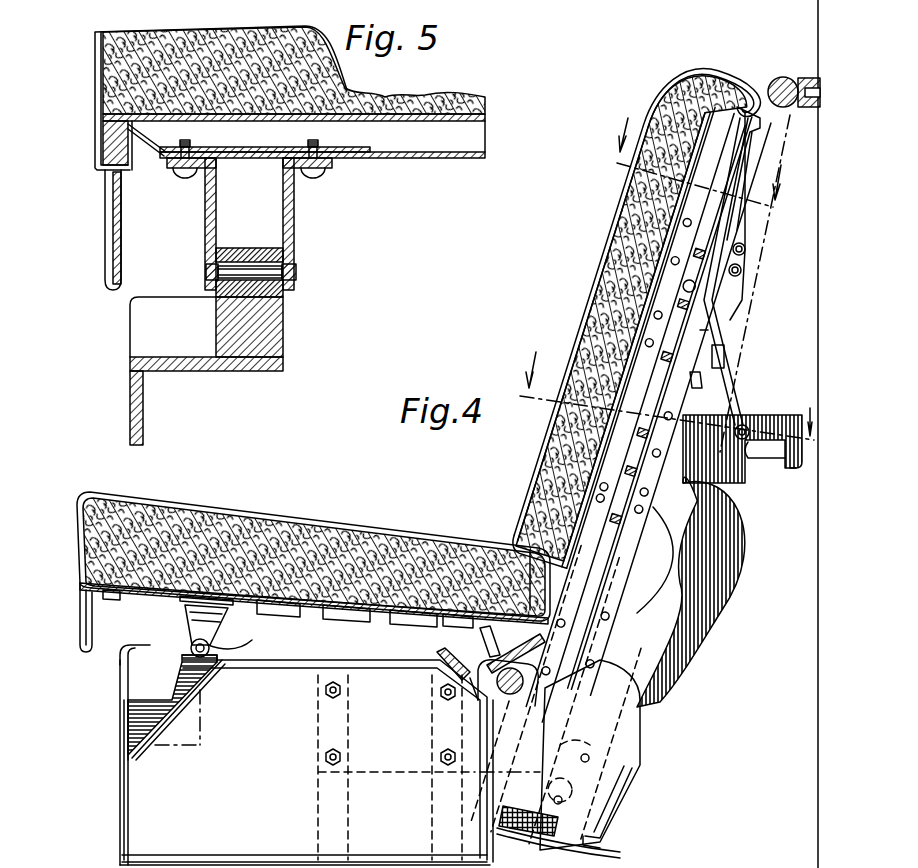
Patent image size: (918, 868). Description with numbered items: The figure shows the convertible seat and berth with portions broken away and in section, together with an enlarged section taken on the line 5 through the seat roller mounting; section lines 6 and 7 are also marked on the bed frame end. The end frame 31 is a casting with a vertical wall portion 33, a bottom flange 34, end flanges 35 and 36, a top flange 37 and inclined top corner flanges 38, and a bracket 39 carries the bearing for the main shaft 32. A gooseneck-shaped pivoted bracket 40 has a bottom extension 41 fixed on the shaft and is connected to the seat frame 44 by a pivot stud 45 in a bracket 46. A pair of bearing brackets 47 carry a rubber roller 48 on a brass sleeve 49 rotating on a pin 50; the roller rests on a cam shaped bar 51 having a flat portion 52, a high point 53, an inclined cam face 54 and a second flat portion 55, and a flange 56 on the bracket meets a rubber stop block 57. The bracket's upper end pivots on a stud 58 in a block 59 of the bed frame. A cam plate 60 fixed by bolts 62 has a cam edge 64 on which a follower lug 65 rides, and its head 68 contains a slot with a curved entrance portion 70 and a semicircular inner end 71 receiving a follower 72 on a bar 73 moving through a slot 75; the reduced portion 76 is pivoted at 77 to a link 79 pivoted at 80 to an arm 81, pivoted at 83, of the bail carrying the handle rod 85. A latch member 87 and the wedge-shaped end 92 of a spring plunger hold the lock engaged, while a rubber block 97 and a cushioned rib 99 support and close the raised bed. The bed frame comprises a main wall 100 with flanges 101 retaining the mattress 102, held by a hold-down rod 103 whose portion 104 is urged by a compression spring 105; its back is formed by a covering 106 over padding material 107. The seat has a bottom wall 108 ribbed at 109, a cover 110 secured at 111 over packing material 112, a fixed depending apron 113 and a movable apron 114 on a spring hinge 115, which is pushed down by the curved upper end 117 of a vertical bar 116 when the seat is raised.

In FIG. 4, the section line 5— 5 is at (182, 755).
In FIG. 4, the section line 6— 6 is at (695, 283).
In FIG. 4, the section line 7— 7 is at (667, 404).
In FIG. 4, the end frame 31 is at (128, 792).
In FIG. 4, the main shaft 32 is at (470, 690).
In FIG. 4, the vertical wall portion 33 is at (128, 816).
In FIG. 4, the bottom flange 34 is at (232, 860).
In FIG. 4, the end flange 35 is at (122, 838).
In FIG. 4, the end flange 36 is at (498, 826).
In FIG. 5, the top flange 37 is at (130, 393).
In FIG. 4, the top flange 37 is at (298, 668).
In FIG. 5, the inclined top corner flange 38 is at (205, 370).
In FIG. 4, the inclined top corner flange 38 is at (205, 685).
In FIG. 4, the bracket 39 is at (480, 704).
In FIG. 4, the pivoted bracket 40 is at (660, 530).
In FIG. 4, the bottom extension 41 is at (508, 655).
In FIG. 4, the seat frame 44 is at (92, 492).
In FIG. 4, the pivot stud 45 is at (495, 560).
In FIG. 4, the bracket 46 is at (225, 652).
In FIG. 5, the bearing bracket 47 is at (283, 190).
In FIG. 4, the bearing bracket 47 is at (220, 618).
In FIG. 5, the rubber roller 48 is at (250, 248).
In FIG. 5, the brass sleeve 49 is at (297, 272).
In FIG. 5, the pin 50 is at (207, 272).
In FIG. 4, the pin 50 is at (192, 647).
In FIG. 5, the cam shaped bar 51 is at (283, 322).
In FIG. 4, the cam shaped bar 51 is at (205, 712).
In FIG. 4, the flat portion 52 is at (218, 672).
In FIG. 4, the high point 53 is at (193, 655).
In FIG. 4, the inclined cam face 54 is at (190, 660).
In FIG. 4, the second flat portion 55 is at (148, 700).
In FIG. 4, the flange 56 is at (482, 638).
In FIG. 4, the rubber stop block 57 is at (445, 656).
In FIG. 4, the stud 58 is at (530, 470).
In FIG. 4, the block 59 is at (596, 520).
In FIG. 4, the cam plate 60 is at (718, 612).
In FIG. 4, the bolt 62 is at (326, 755).
In FIG. 4, the cam edge 64 is at (645, 640).
In FIG. 4, the follower lug 65 is at (528, 690).
In FIG. 4, the head 68 is at (798, 418).
In FIG. 4, the curved entrance portion 70 is at (794, 470).
In FIG. 4, the semicircular inner end 71 is at (765, 454).
In FIG. 4, the follower 72 is at (572, 790).
In FIG. 4, the bar 73 is at (590, 698).
In FIG. 4, the slot 75 is at (578, 752).
In FIG. 4, the reduced portion of bar 76 is at (724, 380).
In FIG. 4, the pivotal connection 77 is at (672, 305).
In FIG. 4, the link 79 is at (740, 280).
In FIG. 4, the pivotal connection 80 is at (742, 270).
In FIG. 4, the arm 81 is at (735, 348).
In FIG. 4, the pivot 83 is at (748, 249).
In FIG. 4, the handle rod 85 is at (745, 426).
In FIG. 4, the latch member 87 is at (722, 372).
In FIG. 4, the wedge-shaped end of plunger 92 is at (690, 380).
In FIG. 4, the rubber block 97 is at (652, 402).
In FIG. 4, the cushioned rib 99 is at (786, 74).
In FIG. 4, the main wall 100 is at (525, 778).
In FIG. 4, the flanges 101 is at (640, 745).
In FIG. 4, the mattress 102 is at (768, 250).
In FIG. 4, the hold-down rod 103 is at (628, 808).
In FIG. 4, the guided portion of rod 104 is at (598, 832).
In FIG. 4, the compression spring 105 is at (540, 838).
In FIG. 4, the covering 106 is at (592, 297).
In FIG. 4, the padding material 107 is at (598, 312).
In FIG. 5, the bottom wall 108 is at (442, 152).
In FIG. 4, the bottom wall 108 is at (365, 622).
In FIG. 5, the rib 109 is at (462, 160).
In FIG. 4, the rib 109 is at (285, 618).
In FIG. 5, the cover 110 is at (95, 45).
In FIG. 4, the cover 110 is at (290, 518).
In FIG. 5, the cover attachment 111 is at (105, 165).
In FIG. 5, the packing material 112 is at (103, 62).
In FIG. 4, the packing material 112 is at (195, 520).
In FIG. 5, the depending apron 113 is at (105, 250).
In FIG. 4, the movable apron 114 is at (78, 645).
In FIG. 4, the spring hinge 115 is at (118, 596).
In FIG. 4, the vertical bar 116 is at (120, 742).
In FIG. 4, the curved upper end 117 is at (110, 655).